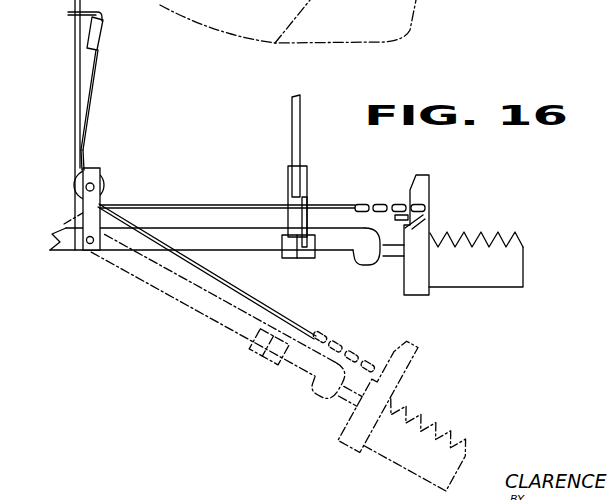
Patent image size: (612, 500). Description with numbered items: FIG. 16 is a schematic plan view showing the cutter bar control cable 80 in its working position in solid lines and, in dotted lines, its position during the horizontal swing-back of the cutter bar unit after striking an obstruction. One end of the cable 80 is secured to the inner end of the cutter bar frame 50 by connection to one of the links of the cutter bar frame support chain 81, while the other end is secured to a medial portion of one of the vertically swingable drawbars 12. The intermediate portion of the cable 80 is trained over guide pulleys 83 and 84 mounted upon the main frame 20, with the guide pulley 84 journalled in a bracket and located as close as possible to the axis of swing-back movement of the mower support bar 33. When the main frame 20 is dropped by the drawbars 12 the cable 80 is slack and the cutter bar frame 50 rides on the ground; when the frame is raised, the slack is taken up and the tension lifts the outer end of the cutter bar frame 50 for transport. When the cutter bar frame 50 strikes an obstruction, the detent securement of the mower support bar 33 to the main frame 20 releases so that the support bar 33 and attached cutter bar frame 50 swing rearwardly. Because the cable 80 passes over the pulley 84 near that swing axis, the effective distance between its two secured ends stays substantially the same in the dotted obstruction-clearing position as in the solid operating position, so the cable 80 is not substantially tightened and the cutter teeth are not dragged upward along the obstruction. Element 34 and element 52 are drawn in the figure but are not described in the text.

The drawbar 12 is at (74, 89).
The guide pulley 83 is at (101, 44).
The cable 80 is at (91, 100).
The guide pulley 84 is at (104, 186).
The pivot bracket 34 is at (90, 252).
The main frame 20 is at (310, 180).
The mower support bar 33 is at (349, 246).
The cutter bar frame support chain 81 is at (386, 203).
The cutter bar frame 50 is at (463, 292).
The spring 52 is at (498, 237).